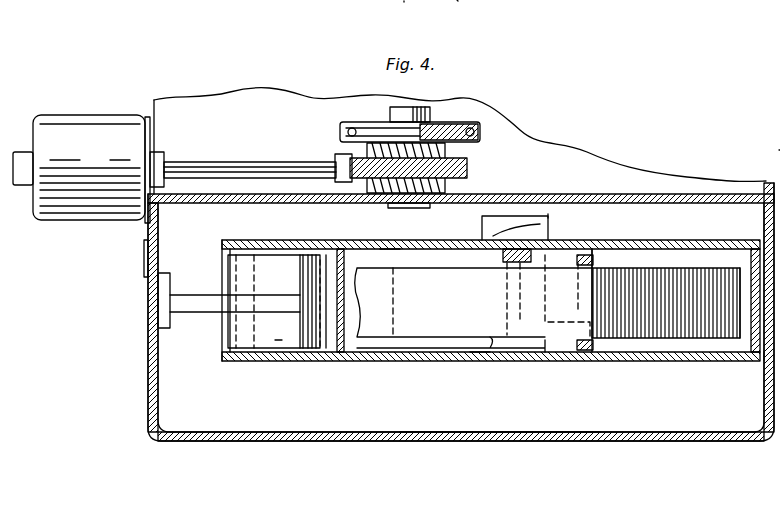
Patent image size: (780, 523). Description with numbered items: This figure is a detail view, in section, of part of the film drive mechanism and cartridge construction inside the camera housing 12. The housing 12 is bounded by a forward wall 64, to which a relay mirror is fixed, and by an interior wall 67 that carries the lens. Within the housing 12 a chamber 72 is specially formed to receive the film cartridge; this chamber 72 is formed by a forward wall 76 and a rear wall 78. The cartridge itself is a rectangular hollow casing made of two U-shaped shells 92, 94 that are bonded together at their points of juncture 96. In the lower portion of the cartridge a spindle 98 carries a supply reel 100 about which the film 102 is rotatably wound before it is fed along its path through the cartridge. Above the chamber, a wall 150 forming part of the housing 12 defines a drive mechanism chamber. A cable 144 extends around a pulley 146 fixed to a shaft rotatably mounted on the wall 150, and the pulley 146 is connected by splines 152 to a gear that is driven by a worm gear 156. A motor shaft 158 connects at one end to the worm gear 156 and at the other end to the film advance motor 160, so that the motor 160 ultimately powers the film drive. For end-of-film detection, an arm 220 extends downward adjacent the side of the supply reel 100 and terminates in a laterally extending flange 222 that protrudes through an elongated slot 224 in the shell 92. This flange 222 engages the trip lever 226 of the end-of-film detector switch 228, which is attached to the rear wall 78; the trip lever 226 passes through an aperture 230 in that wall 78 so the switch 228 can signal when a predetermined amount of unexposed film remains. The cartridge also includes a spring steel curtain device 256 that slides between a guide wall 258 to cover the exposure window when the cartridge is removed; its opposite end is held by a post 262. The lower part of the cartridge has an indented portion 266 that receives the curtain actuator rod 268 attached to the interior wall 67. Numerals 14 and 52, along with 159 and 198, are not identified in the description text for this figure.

The housing 14 is at (407, 1).
The cover 52 is at (458, 0).
The housing 12 is at (772, 141).
The forward wall 64 is at (596, 428).
The interior wall 67 is at (148, 350).
The chamber 72 is at (325, 248).
The forward wall 76 is at (680, 361).
The rear wall 78 is at (640, 248).
The U-shaped shell 92 is at (404, 262).
The U-shaped shell 94 is at (414, 361).
The point of juncture 96 is at (714, 363).
The spindle 98 is at (597, 252).
The supply reel 100 is at (478, 361).
The film 102 is at (392, 248).
The cable 144 is at (482, 132).
The pulley 146 is at (442, 122).
The wall 150 is at (605, 196).
The splines 152 is at (445, 152).
The worm gear 156 is at (336, 162).
The motor shaft 158 is at (205, 164).
The worm 159 is at (468, 170).
The film advance motor 160 is at (126, 104).
The bracket 198 is at (405, 207).
The arm 220 is at (508, 262).
The flange 222 is at (503, 256).
The elongated slot 224 is at (518, 262).
The trip lever 226 is at (482, 226).
The end-of-film detector switch 228 is at (548, 216).
The aperture 230 is at (532, 236).
The curtain device 256 is at (262, 272).
The guide wall 258 is at (346, 352).
The post 262 is at (262, 244).
The indented portion 266 is at (330, 352).
The curtain actuator rod 268 is at (280, 348).